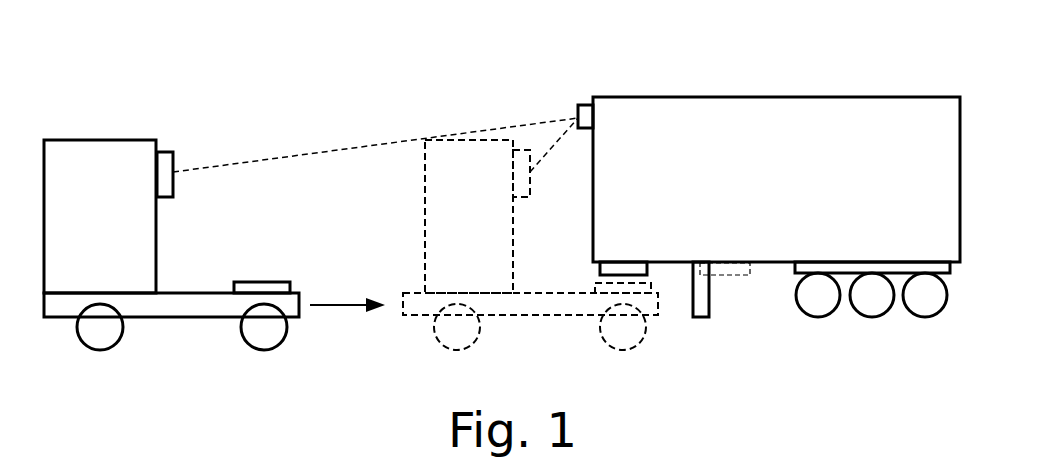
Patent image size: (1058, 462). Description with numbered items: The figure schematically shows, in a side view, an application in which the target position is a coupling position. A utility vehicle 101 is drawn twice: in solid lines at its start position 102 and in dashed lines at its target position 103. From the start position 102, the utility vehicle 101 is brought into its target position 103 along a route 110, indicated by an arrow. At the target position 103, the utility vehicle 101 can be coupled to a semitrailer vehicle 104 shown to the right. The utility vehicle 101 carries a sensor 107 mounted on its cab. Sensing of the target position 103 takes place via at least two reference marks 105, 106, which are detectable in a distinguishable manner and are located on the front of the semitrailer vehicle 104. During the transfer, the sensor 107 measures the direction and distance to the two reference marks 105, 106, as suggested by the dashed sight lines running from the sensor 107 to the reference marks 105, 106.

The utility vehicle 101 is at (351, 201).
The start position 102 is at (131, 153).
The target position 103 is at (502, 248).
The semitrailer vehicle 104 is at (803, 193).
The reference mark 105 is at (547, 77).
The reference mark 106 is at (577, 115).
The sensor 107 is at (173, 162).
The route 110 is at (347, 283).